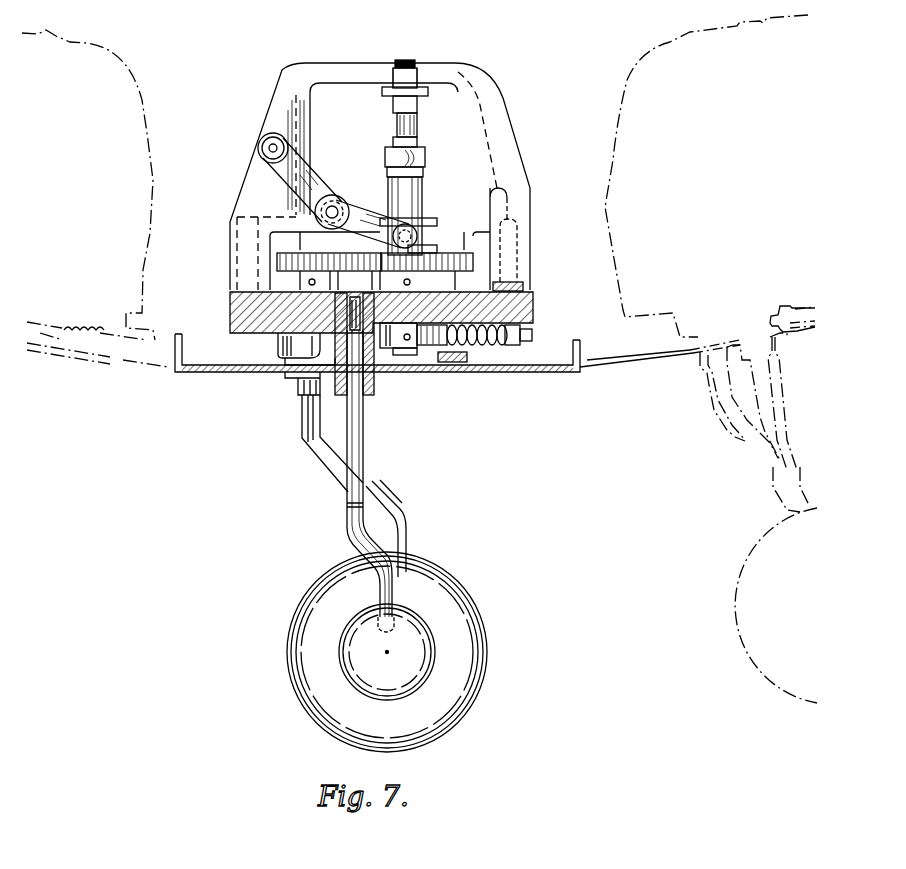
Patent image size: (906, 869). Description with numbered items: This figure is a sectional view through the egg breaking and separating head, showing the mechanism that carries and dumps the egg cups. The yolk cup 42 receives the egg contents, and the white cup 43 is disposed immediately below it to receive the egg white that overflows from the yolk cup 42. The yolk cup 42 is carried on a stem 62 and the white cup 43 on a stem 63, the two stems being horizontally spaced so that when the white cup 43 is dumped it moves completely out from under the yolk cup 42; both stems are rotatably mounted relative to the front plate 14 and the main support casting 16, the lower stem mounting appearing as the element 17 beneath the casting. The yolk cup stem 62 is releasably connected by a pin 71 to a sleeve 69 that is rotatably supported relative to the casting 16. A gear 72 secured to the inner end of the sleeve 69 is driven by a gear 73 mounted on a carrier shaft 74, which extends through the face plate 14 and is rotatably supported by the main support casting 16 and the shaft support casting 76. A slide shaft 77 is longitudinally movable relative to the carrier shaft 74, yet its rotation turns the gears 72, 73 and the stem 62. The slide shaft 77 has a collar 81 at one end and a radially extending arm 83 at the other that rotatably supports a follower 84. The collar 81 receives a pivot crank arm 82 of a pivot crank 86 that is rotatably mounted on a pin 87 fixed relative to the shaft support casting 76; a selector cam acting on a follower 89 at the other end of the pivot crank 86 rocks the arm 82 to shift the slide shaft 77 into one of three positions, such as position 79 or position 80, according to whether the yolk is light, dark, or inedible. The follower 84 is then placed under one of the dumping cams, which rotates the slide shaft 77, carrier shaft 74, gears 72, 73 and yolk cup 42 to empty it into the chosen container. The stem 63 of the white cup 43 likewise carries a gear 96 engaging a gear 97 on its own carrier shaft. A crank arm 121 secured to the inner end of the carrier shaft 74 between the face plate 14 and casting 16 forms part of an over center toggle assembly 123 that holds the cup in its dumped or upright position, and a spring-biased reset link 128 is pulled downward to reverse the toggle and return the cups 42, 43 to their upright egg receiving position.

The front plate 14 is at (135, 374).
The main support casting 16 is at (535, 302).
The bearing 17 is at (230, 376).
The yolk cup 42 is at (405, 678).
The white cup 43 is at (316, 578).
The yolk cup stem 62 is at (365, 436).
The white cup stem 63 is at (320, 448).
The sleeve 69 is at (408, 358).
The pin 71 is at (374, 392).
The gear 72 is at (345, 255).
The gear 73 is at (425, 262).
The carrier shaft 74 is at (392, 124).
The shaft support casting 76 is at (98, 58).
The slide shaft 77 is at (424, 184).
The position 79 is at (418, 138).
The position 80 is at (418, 112).
The collar 81 is at (428, 224).
The pivot crank arm 82 is at (420, 240).
The radially extending arm 83 is at (422, 165).
The follower 84 is at (390, 162).
The pivot crank 86 is at (338, 205).
The pin 87 is at (340, 198).
The follower 89 is at (258, 147).
The gear 96 is at (278, 266).
The gear 97 is at (452, 284).
The crank arm 121 is at (395, 348).
The over center toggle assembly 123 is at (478, 345).
The reset link 128 is at (456, 364).